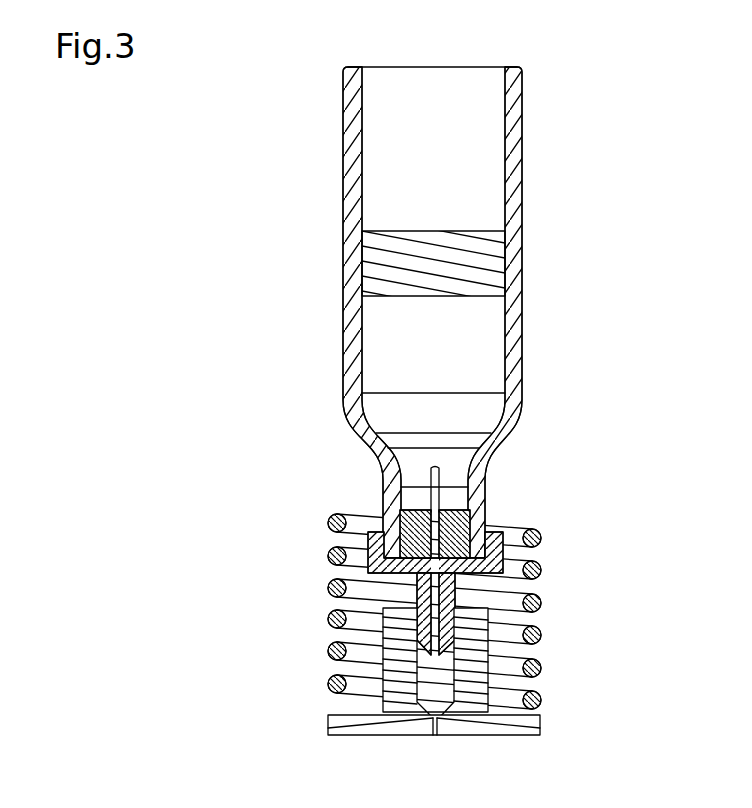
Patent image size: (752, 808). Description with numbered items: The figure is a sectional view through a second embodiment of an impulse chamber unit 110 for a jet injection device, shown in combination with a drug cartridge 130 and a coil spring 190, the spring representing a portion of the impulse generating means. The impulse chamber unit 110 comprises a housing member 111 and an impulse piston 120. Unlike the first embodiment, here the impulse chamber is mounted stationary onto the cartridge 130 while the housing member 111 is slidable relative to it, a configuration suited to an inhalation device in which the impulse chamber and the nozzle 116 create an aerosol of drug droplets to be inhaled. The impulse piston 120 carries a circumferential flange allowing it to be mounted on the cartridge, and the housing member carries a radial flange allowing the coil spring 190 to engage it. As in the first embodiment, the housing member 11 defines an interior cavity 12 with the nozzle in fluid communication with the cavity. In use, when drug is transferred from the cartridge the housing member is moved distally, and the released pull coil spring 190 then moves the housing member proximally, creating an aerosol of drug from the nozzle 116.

The impulse chamber unit 110 is at (247, 609).
The drug cartridge 130 is at (522, 188).
The coil spring 190 is at (541, 537).
The interior cavity 12 is at (504, 554).
The impulse piston 120 is at (458, 630).
The housing member 111 is at (476, 712).
The housing member 11 is at (540, 730).
The nozzle 116 is at (433, 735).